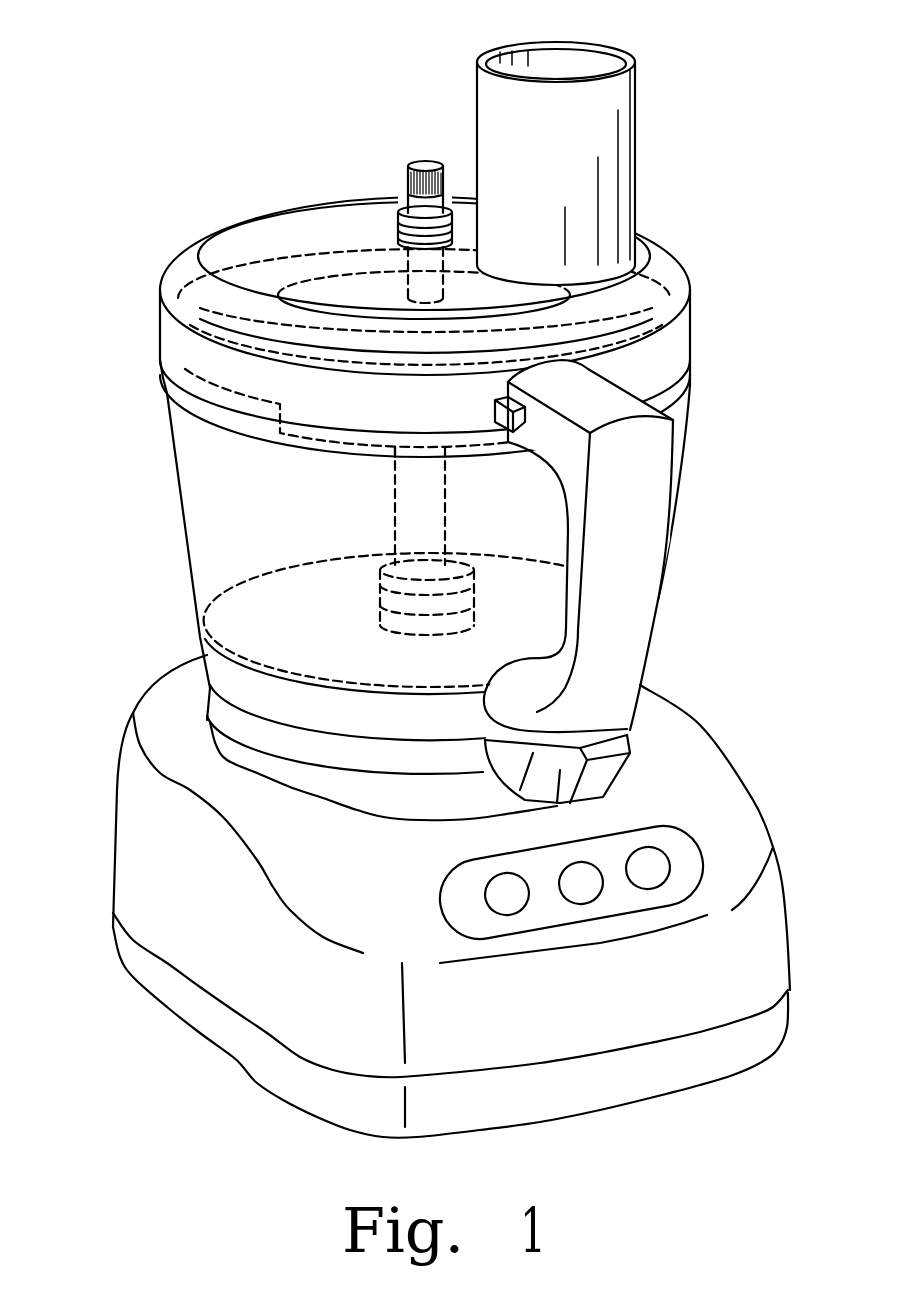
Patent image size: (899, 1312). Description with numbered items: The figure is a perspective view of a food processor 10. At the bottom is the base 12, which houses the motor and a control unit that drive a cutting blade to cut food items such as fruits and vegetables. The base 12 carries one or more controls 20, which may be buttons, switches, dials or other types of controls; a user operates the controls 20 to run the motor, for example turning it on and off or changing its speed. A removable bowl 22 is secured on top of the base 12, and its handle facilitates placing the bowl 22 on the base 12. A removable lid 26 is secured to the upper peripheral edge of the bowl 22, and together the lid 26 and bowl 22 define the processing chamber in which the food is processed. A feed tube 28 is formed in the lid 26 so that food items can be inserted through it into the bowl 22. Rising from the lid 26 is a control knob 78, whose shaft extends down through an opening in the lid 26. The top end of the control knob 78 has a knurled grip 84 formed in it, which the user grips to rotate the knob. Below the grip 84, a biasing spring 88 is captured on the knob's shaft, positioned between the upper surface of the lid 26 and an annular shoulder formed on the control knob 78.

The food processor 10 is at (422, 574).
The base 12 is at (429, 896).
The controls 20 is at (649, 874).
The bowl 22 is at (197, 517).
The lid 26 is at (677, 265).
The feed tube 28 is at (623, 120).
The control knob 78 is at (402, 202).
The knurled grip 84 is at (443, 177).
The biasing spring 88 is at (397, 222).